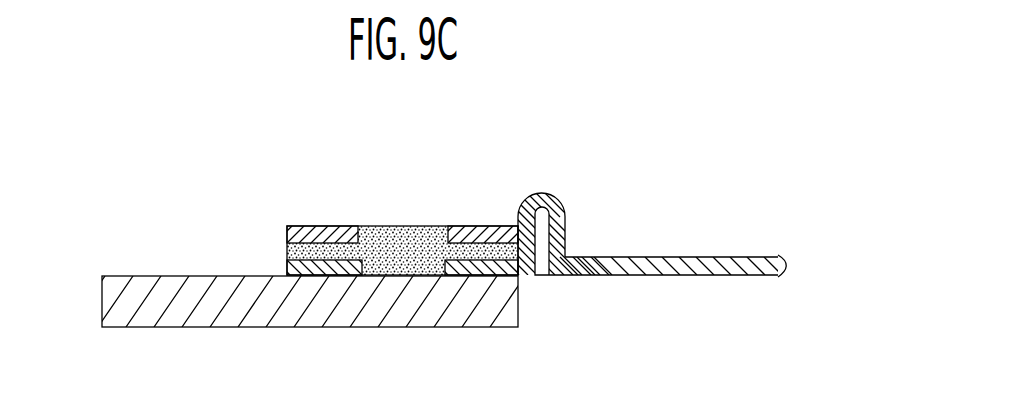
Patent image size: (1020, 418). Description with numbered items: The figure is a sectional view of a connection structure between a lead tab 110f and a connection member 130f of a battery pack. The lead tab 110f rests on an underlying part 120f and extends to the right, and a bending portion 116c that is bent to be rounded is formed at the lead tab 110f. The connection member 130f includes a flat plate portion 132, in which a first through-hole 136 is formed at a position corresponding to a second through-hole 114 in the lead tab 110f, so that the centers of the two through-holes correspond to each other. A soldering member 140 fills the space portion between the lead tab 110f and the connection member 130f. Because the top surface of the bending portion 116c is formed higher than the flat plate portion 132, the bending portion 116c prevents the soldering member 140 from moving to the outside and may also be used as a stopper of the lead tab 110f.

The lead tab 110f is at (611, 196).
The bending portion 116c is at (541, 203).
The substrate 120f is at (237, 313).
The connection member 130f is at (394, 263).
The flat plate portion 132 is at (473, 233).
The first through-hole 136 is at (370, 232).
The soldering member 140 is at (413, 250).
The second through-hole 114 is at (363, 266).